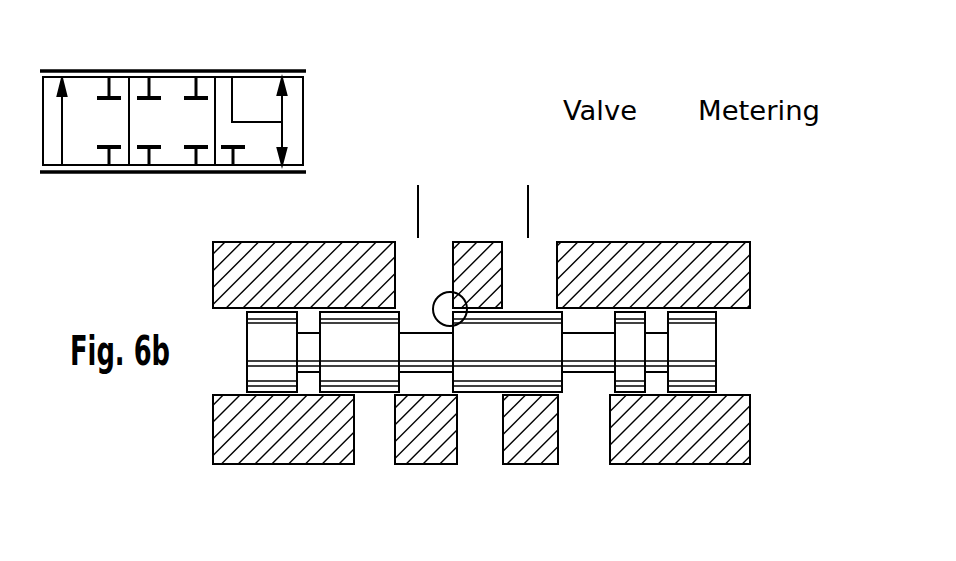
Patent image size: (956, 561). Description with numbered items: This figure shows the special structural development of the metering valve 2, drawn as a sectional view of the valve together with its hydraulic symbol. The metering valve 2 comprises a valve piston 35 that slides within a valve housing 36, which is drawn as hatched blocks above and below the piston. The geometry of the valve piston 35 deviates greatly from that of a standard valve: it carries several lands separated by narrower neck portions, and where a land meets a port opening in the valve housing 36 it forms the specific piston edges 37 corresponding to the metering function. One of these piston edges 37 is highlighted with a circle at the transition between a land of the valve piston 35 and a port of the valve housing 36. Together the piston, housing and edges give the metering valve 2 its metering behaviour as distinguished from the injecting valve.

The metering valve 2 is at (199, 68).
The valve piston 35 is at (699, 373).
The valve housing 36 is at (707, 446).
The piston edges 37 is at (446, 300).